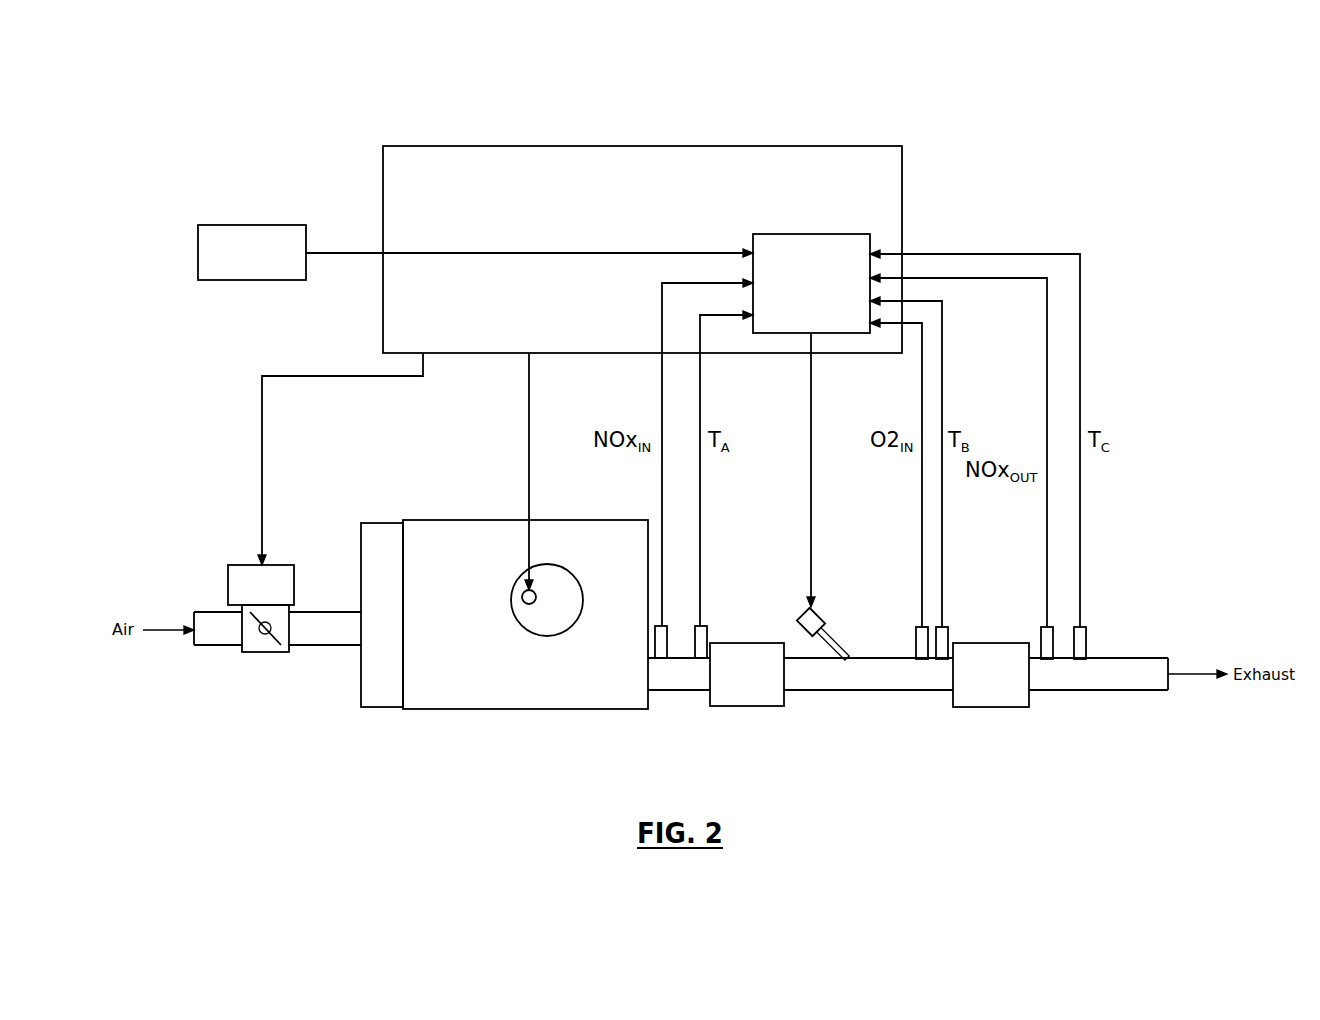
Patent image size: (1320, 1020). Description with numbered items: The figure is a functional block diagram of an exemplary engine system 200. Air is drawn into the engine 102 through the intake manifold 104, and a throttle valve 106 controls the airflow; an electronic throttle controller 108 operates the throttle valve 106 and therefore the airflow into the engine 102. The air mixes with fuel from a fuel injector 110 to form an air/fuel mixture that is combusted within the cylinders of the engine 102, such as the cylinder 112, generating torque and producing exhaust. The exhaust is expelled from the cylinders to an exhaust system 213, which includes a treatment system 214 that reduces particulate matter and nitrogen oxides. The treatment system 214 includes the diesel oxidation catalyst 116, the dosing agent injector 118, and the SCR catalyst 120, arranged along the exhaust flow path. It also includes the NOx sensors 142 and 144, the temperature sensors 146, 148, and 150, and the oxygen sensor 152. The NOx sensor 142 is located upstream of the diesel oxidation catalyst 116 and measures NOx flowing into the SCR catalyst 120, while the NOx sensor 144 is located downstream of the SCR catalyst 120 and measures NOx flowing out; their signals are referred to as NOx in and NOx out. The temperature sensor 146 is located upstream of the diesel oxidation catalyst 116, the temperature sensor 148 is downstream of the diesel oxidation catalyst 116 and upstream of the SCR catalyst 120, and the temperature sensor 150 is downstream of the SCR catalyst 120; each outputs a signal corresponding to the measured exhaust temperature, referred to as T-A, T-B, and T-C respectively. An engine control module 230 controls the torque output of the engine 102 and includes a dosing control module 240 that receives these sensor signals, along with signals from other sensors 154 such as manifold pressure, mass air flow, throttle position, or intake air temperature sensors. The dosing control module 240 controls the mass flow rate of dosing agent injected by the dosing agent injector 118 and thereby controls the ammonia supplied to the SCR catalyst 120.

The engine system 200 is at (225, 90).
The engine control module 230 is at (643, 146).
The dosing control module 240 is at (813, 234).
The other sensors 154 is at (252, 225).
The engine 102 is at (463, 520).
The intake manifold 104 is at (383, 523).
The throttle valve 106 is at (266, 652).
The electronic throttle controller 108 is at (250, 565).
The fuel injector 110 is at (521, 595).
The cylinder 112 is at (547, 636).
The diesel oxidation catalyst 116 is at (758, 643).
The dosing agent injector 118 is at (805, 614).
The SCR catalyst 120 is at (1000, 707).
The NOx sensor 142 is at (660, 690).
The NOx sensor 144 is at (1045, 627).
The temperature sensor 146 is at (700, 690).
The temperature sensor 148 is at (942, 690).
The temperature sensor 150 is at (1080, 690).
The oxygen sensor 152 is at (922, 690).
The exhaust system 213 is at (1140, 540).
The treatment system 214 is at (1030, 806).